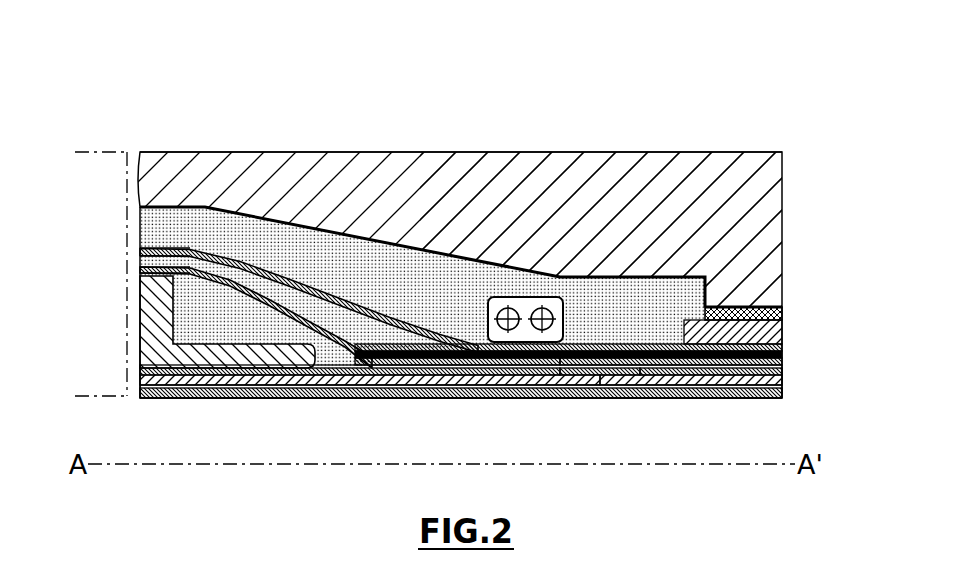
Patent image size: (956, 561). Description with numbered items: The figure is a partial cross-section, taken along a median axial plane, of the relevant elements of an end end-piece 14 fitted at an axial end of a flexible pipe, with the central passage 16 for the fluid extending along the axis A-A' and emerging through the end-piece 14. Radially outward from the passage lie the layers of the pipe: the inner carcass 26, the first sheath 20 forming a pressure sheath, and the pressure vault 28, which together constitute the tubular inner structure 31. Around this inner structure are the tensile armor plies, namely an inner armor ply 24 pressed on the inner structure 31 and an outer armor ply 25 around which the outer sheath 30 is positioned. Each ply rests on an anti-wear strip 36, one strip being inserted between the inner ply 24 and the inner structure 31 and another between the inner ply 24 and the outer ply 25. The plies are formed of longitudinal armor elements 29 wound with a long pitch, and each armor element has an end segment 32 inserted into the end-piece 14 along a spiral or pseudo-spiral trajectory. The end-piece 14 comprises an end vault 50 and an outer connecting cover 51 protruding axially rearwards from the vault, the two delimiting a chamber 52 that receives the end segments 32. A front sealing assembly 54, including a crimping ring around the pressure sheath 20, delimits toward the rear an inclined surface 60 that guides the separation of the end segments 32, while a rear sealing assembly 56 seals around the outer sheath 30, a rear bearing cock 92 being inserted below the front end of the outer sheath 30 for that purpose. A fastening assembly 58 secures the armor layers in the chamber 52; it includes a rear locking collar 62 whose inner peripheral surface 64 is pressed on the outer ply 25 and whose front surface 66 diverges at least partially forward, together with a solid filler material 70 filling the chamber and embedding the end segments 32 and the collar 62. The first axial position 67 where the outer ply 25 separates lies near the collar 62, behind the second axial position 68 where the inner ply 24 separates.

The end end-piece 14 is at (560, 100).
The central passage 16 is at (461, 327).
The first sheath 20 is at (782, 393).
The inner armor ply 24 is at (782, 352).
The outer armor ply 25 is at (782, 330).
The inner carcass 26 is at (677, 382).
The pressure vault 28 is at (782, 372).
The armor elements 29 is at (347, 297).
The outer sheath 30 is at (760, 306).
The tubular inner structure 31 is at (841, 366).
The end segment 32 is at (236, 242).
The anti-wear strip 36 is at (603, 368).
The end vault 50 is at (95, 274).
The outer connecting cover 51 is at (397, 183).
The chamber 52 is at (198, 232).
The front sealing assembly 54 is at (155, 330).
The rear sealing assembly 56 is at (650, 254).
The fastening assembly 58 is at (479, 215).
The inclined surface 60 is at (312, 350).
The rear locking collar 62 is at (518, 297).
The inner peripheral surface 64 is at (523, 367).
The front surface 66 is at (485, 335).
The first axial position 67 is at (480, 366).
The second axial position 68 is at (408, 378).
The solid filler material 70 is at (287, 255).
The rear bearing cock 92 is at (742, 293).